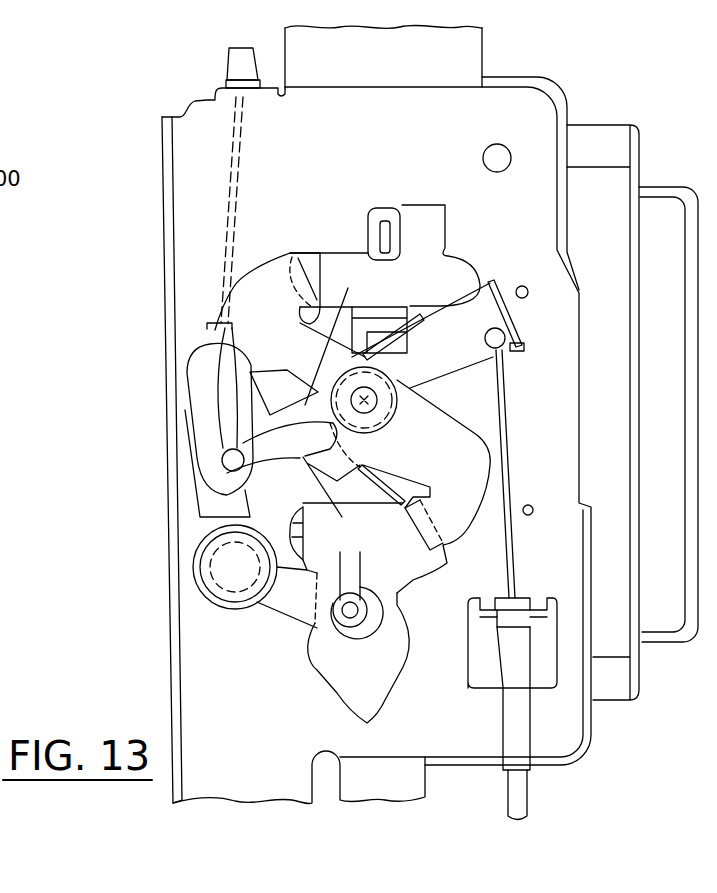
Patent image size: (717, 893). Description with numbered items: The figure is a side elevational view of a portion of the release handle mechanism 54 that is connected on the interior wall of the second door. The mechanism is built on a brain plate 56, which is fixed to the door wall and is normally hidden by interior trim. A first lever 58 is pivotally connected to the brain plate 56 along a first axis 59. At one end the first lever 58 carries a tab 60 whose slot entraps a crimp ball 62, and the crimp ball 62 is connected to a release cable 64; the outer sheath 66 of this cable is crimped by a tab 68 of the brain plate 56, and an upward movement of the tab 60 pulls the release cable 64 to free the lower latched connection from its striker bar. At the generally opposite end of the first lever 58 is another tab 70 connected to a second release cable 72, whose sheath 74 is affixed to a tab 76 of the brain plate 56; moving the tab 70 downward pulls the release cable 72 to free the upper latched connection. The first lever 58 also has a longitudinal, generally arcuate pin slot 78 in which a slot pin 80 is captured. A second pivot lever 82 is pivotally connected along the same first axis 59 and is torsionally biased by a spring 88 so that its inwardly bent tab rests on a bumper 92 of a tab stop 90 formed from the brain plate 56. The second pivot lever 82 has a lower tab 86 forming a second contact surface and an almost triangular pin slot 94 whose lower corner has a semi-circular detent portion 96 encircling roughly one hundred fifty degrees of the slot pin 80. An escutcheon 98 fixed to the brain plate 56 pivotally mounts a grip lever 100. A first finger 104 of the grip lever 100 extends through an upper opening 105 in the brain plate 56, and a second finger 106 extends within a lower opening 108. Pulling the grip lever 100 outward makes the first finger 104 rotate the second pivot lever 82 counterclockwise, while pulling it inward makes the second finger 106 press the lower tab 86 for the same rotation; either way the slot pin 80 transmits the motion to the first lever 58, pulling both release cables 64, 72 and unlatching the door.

The release handle mechanism 54 is at (515, 64).
The brain plate 56 is at (452, 768).
The first lever 58 is at (460, 317).
The first axis 59 is at (378, 412).
The tab 60 is at (518, 356).
The crimp ball 62 is at (505, 333).
The release cable 64 is at (511, 452).
The outer sheath 66 is at (525, 735).
The tab 68 is at (537, 607).
The tab 70 is at (248, 368).
The release cable 72 is at (251, 146).
The sheath 74 is at (230, 67).
The tab 76 is at (225, 82).
The pin slot 78 is at (340, 500).
The slot pin 80 is at (200, 362).
The second pivot lever 82 is at (452, 421).
The lower tab 86 is at (427, 542).
The spring 88 is at (410, 332).
The tab stop 90 is at (385, 218).
The bumper 92 is at (404, 215).
The pin slot 94 is at (266, 374).
The semi-circular detent portion 96 is at (222, 459).
The escutcheon 98 is at (635, 148).
The grip lever 100 is at (692, 353).
The first finger 104 is at (310, 268).
The upper opening 105 is at (452, 253).
The second finger 106 is at (303, 538).
The lower opening 108 is at (341, 686).